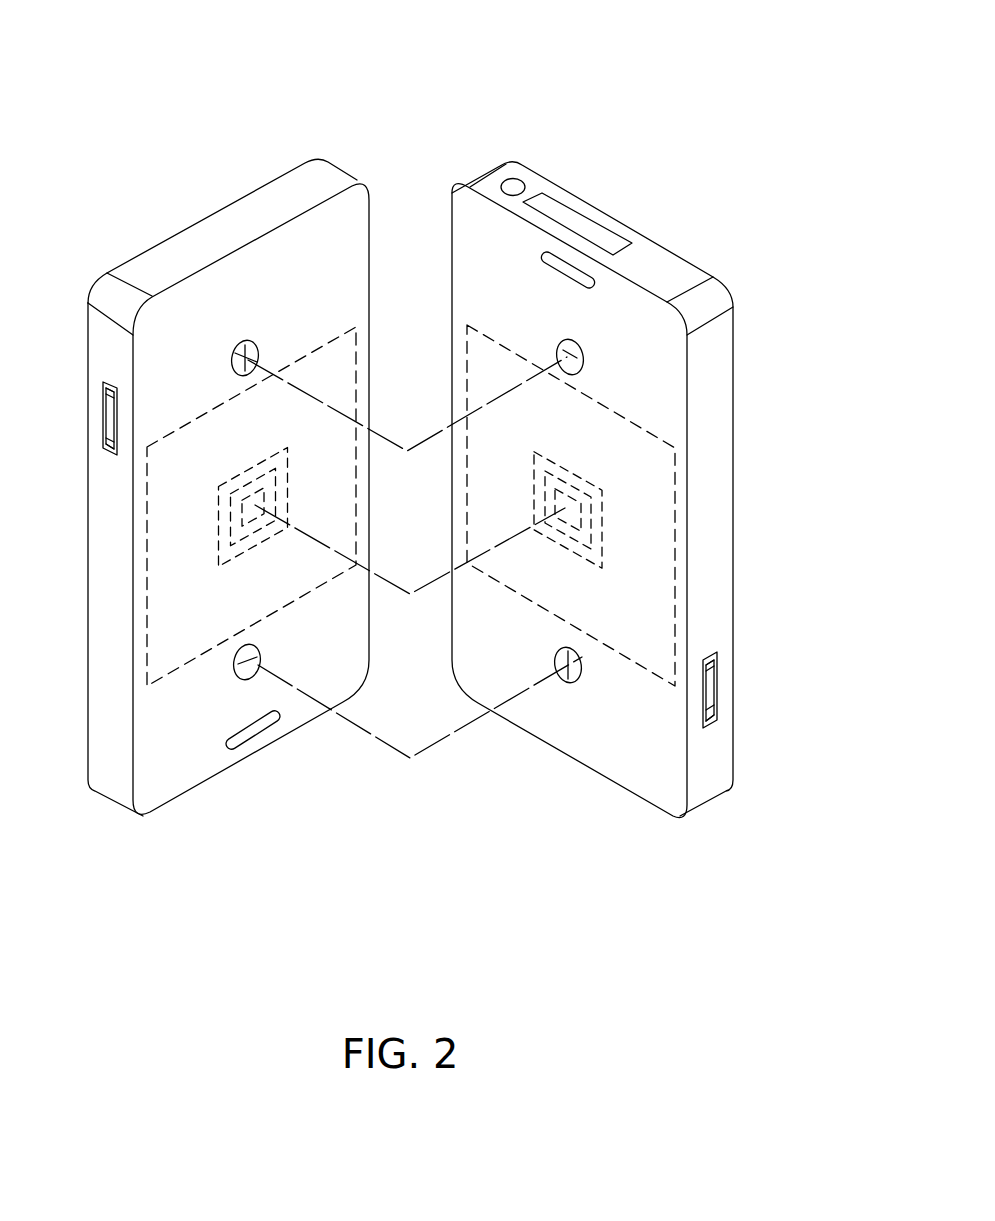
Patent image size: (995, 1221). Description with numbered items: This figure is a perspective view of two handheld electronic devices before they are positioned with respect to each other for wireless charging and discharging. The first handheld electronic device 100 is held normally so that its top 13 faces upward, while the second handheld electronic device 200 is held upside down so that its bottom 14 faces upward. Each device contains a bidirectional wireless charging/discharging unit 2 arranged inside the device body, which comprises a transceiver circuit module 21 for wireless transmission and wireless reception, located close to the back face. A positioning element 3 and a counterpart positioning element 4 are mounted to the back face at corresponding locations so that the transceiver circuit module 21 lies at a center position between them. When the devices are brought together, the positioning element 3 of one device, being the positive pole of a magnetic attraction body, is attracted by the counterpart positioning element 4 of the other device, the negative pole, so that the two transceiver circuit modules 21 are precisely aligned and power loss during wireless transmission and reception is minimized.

The first handheld electronic device 100 is at (203, 433).
The second handheld electronic device 200 is at (592, 454).
The top 13 is at (192, 250).
The top side of second electronic device 14 is at (658, 262).
The bidirectional wireless charging/discharging unit 2 is at (358, 349).
The transceiver circuit module 21 is at (228, 514).
The positioning element 3 is at (232, 357).
The counterpart positioning element 4 is at (236, 672).